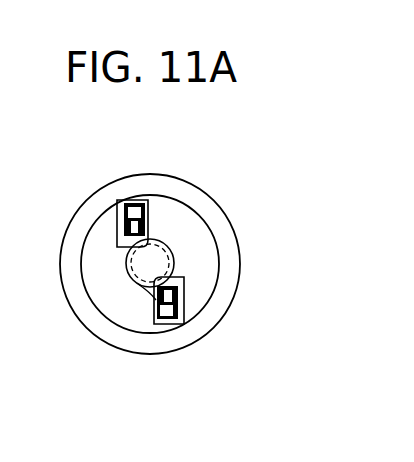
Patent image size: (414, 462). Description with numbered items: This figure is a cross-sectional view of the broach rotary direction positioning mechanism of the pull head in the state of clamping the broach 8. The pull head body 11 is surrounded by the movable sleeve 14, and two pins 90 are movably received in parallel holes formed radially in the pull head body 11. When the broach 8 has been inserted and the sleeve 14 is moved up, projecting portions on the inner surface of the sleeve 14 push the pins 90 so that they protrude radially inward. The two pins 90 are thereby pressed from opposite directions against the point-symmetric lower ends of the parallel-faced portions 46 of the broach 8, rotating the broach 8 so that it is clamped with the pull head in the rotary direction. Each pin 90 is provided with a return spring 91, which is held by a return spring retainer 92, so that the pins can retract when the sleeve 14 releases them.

The broach 8 is at (167, 260).
The pull head body 11 is at (195, 240).
The sleeve 14 is at (228, 241).
The parallel-faced portions 46 is at (160, 247).
The pins 90 is at (148, 287).
The return spring 91 is at (157, 303).
The return spring retainer 92 is at (167, 324).